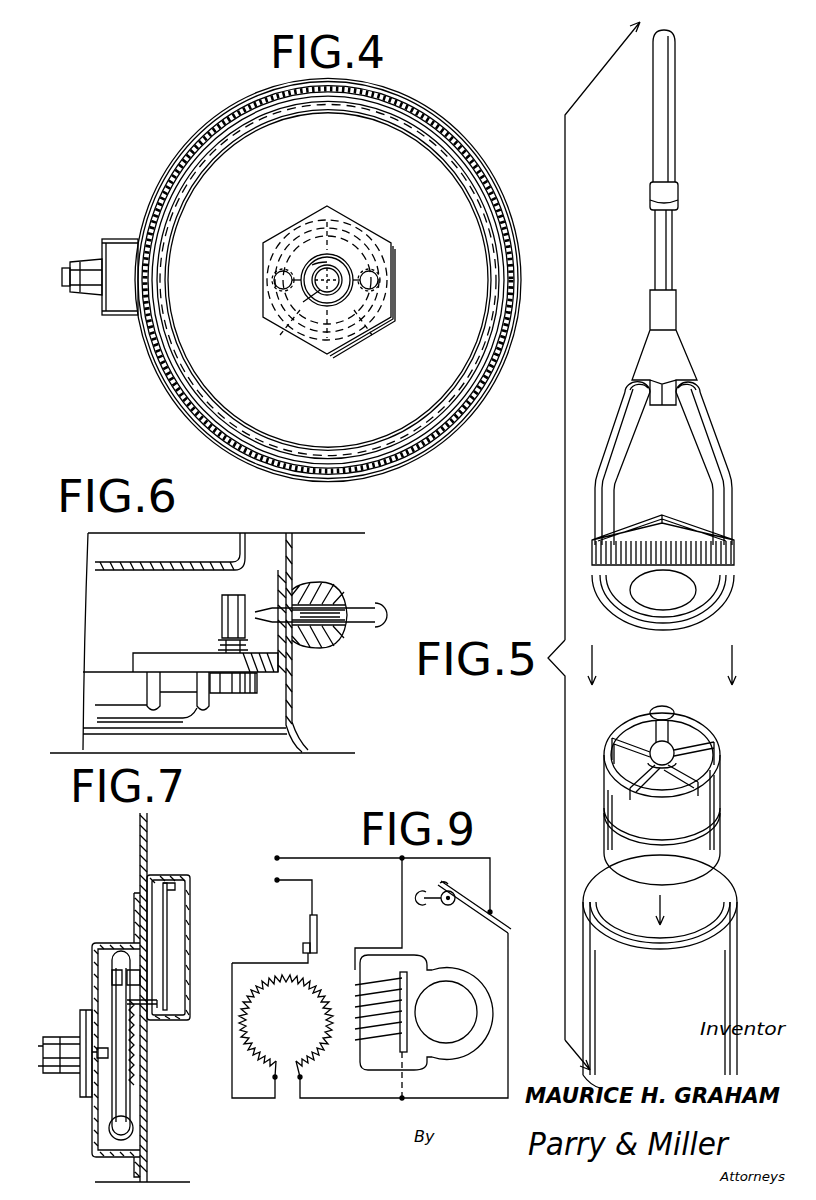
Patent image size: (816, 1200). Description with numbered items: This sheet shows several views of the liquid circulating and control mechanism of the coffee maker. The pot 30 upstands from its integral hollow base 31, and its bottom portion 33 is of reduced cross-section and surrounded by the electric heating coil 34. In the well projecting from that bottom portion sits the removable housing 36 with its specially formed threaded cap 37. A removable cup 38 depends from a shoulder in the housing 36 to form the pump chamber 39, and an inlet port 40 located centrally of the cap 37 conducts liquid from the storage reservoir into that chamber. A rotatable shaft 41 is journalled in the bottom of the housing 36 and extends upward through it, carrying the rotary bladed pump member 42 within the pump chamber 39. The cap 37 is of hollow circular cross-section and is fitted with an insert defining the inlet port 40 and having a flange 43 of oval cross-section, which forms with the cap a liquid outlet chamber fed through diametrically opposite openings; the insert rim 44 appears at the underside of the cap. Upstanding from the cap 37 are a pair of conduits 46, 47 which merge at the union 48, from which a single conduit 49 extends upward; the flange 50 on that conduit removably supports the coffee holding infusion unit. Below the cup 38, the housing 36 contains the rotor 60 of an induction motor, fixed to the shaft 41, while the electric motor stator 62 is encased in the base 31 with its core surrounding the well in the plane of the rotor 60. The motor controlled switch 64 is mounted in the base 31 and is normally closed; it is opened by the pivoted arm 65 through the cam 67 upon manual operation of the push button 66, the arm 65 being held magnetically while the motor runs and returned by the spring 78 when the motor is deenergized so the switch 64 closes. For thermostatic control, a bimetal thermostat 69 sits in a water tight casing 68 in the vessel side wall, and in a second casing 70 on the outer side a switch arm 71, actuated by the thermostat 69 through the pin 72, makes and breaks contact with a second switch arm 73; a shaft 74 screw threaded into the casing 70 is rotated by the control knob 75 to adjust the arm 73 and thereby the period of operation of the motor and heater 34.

In FIG. 7, the metal pot 30 is at (138, 822).
In FIG. 4, the hollow base 31 is at (445, 120).
In FIG. 6, the hollow base 31 is at (292, 688).
In FIG. 4, the bottom portion 33 is at (365, 120).
In FIG. 6, the bottom portion 33 is at (238, 542).
In FIG. 9, the electric heating coil 34 is at (309, 998).
In FIG. 5, the housing 36 is at (712, 985).
In FIG. 4, the threaded cap 37 is at (378, 240).
In FIG. 5, the threaded cap 37 is at (738, 548).
In FIG. 5, the removable cup 38 is at (720, 810).
In FIG. 5, the pump chamber 39 is at (700, 762).
In FIG. 4, the inlet port 40 is at (336, 292).
In FIG. 5, the inlet port 40 is at (662, 606).
In FIG. 4, the rotatable shaft 41 is at (293, 330).
In FIG. 5, the rotatable shaft 41 is at (674, 720).
In FIG. 4, the rotary bladed pump member 42 is at (345, 215).
In FIG. 5, the rotary bladed pump member 42 is at (700, 742).
In FIG. 5, the flange 43 is at (715, 598).
In FIG. 5, the rim 44 is at (672, 628).
In FIG. 4, the conduit 46 is at (272, 275).
In FIG. 5, the conduit 46 is at (605, 500).
In FIG. 4, the conduit 47 is at (380, 272).
In FIG. 5, the conduit 47 is at (712, 462).
In FIG. 5, the union 48 is at (668, 362).
In FIG. 5, the conduit 49 is at (668, 248).
In FIG. 5, the flange 50 is at (678, 195).
In FIG. 5, the rotor 60 is at (720, 845).
In FIG. 9, the electric motor stator 62 is at (370, 1052).
In FIG. 6, the motor controlled switch 64 is at (175, 683).
In FIG. 9, the motor controlled switch 64 is at (458, 902).
In FIG. 6, the pivoted arm 65 is at (222, 612).
In FIG. 9, the pivoted arm 65 is at (432, 905).
In FIG. 6, the push button 66 is at (350, 608).
In FIG. 6, the cam 67 is at (230, 692).
In FIG. 7, the water tight casing 68 is at (190, 905).
In FIG. 7, the bimetal thermostat 69 is at (168, 958).
In FIG. 9, the bimetal thermostat 69 is at (318, 935).
In FIG. 4, the second casing 70 is at (118, 298).
In FIG. 7, the second casing 70 is at (92, 962).
In FIG. 7, the switch arm 71 is at (128, 1090).
In FIG. 7, the pin 72 is at (160, 1020).
In FIG. 7, the second switch arm 73 is at (112, 1105).
In FIG. 7, the shaft 74 is at (100, 1048).
In FIG. 4, the control knob 75 is at (78, 290).
In FIG. 7, the control knob 75 is at (60, 1060).
In FIG. 6, the spring 78 is at (220, 643).